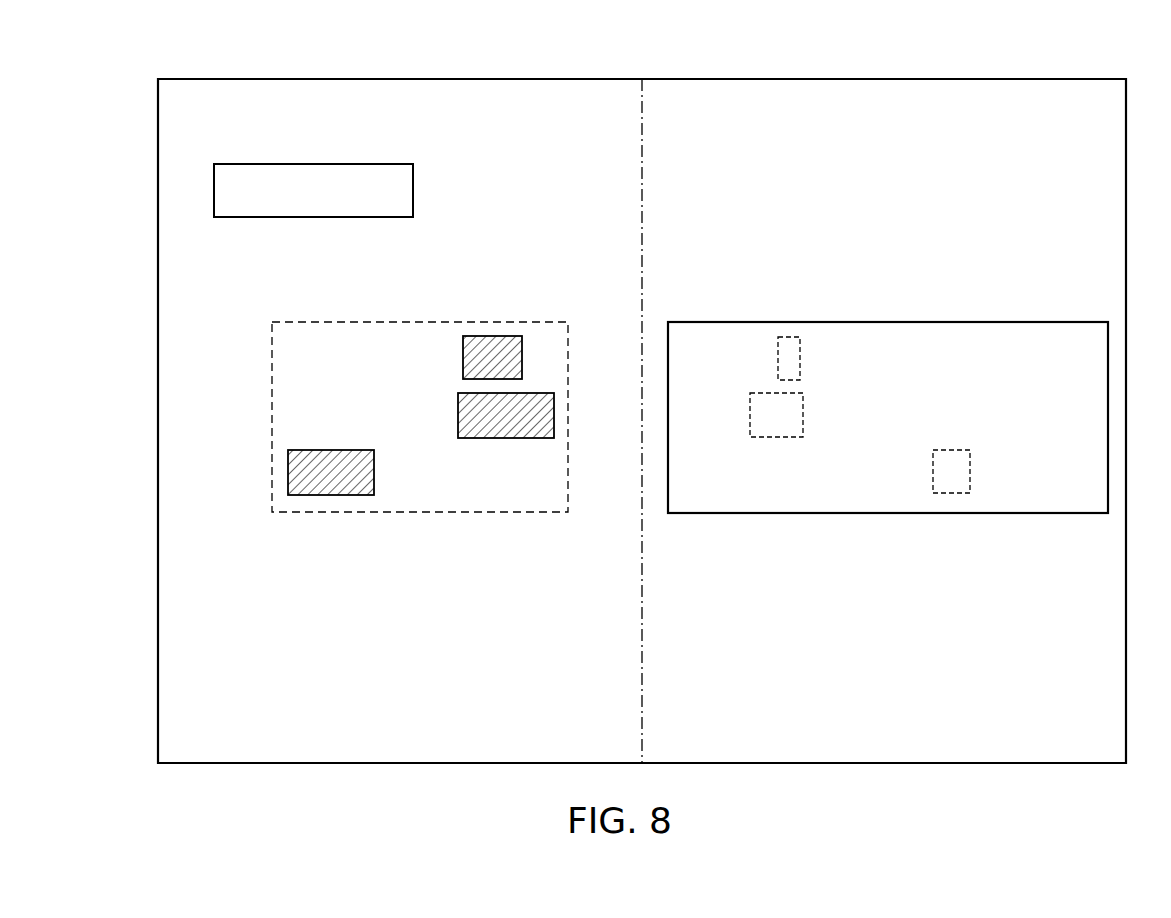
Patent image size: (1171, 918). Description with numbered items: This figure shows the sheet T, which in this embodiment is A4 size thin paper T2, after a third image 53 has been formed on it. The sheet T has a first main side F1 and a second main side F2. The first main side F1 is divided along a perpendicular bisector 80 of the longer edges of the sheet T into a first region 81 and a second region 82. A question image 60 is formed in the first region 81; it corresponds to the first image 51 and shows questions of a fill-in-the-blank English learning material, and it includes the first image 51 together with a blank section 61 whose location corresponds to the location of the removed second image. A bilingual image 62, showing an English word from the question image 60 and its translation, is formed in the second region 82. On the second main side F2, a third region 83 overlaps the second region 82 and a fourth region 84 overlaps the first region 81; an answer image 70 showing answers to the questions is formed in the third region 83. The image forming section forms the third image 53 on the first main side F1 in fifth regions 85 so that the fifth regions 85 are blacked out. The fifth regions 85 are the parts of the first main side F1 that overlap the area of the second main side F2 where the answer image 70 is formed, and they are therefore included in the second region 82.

The sheet T is at (642, 385).
The thin paper T2 is at (642, 387).
The first main side F1 is at (777, 117).
The second main side F2 is at (540, 107).
The first image 51 is at (885, 343).
The third image 53 is at (463, 357).
The question image 60 is at (1012, 322).
The blank section 61 is at (789, 337).
The bilingual image 62 is at (366, 164).
The answer image 70 is at (550, 322).
The perpendicular bisector 80 is at (643, 650).
The first region 81 is at (835, 745).
The second region 82 is at (350, 744).
The third region 83 is at (455, 744).
The fourth region 84 is at (940, 744).
The fifth regions 85 is at (483, 336).